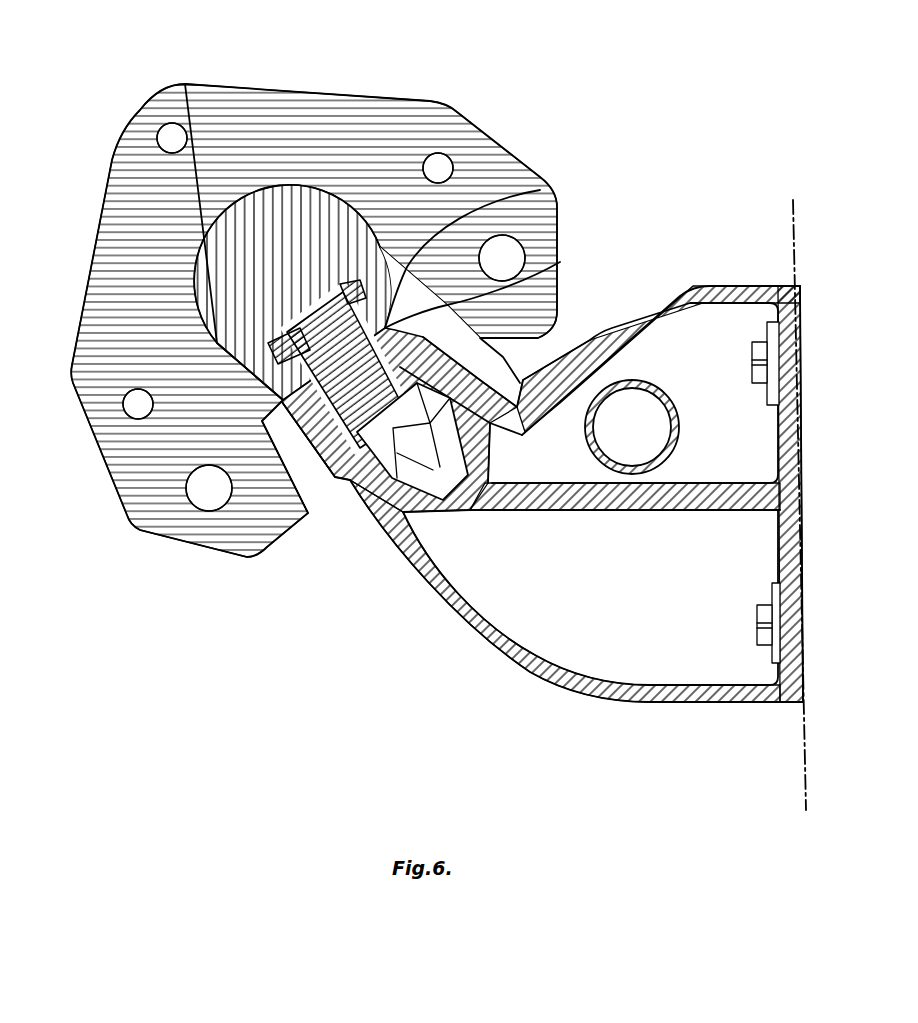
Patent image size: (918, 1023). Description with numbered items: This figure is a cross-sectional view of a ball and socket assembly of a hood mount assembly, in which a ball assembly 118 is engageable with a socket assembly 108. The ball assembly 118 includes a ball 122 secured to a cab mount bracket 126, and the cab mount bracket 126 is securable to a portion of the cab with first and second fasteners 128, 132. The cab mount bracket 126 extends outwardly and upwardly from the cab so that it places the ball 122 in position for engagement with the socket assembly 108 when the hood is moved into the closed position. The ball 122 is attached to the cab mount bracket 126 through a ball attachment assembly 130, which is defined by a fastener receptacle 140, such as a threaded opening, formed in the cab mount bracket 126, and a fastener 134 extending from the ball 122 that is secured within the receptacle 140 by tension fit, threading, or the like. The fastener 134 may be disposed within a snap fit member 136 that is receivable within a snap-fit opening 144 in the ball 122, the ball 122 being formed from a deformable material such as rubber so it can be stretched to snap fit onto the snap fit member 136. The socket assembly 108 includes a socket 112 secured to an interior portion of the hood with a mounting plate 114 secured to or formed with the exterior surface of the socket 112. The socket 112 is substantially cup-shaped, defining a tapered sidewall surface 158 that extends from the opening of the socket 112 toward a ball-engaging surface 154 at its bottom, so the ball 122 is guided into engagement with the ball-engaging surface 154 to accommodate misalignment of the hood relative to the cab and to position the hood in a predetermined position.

The socket assembly 108 is at (441, 99).
The socket 112 is at (360, 492).
The mounting plate 114 is at (542, 390).
The ball assembly 118 is at (400, 586).
The ball 122 is at (295, 228).
The cab mount bracket 126 is at (558, 350).
The first fastener 128 is at (753, 358).
The ball attachment assembly 130 is at (290, 418).
The second fastener 132 is at (757, 632).
The fastener 134 is at (372, 548).
The snap fit member 136 is at (560, 262).
The fastener receptacle 140 is at (357, 462).
The snap-fit opening 144 is at (380, 247).
The ball-engaging surface 154 is at (233, 210).
The tapered sidewall surface 158 is at (540, 190).